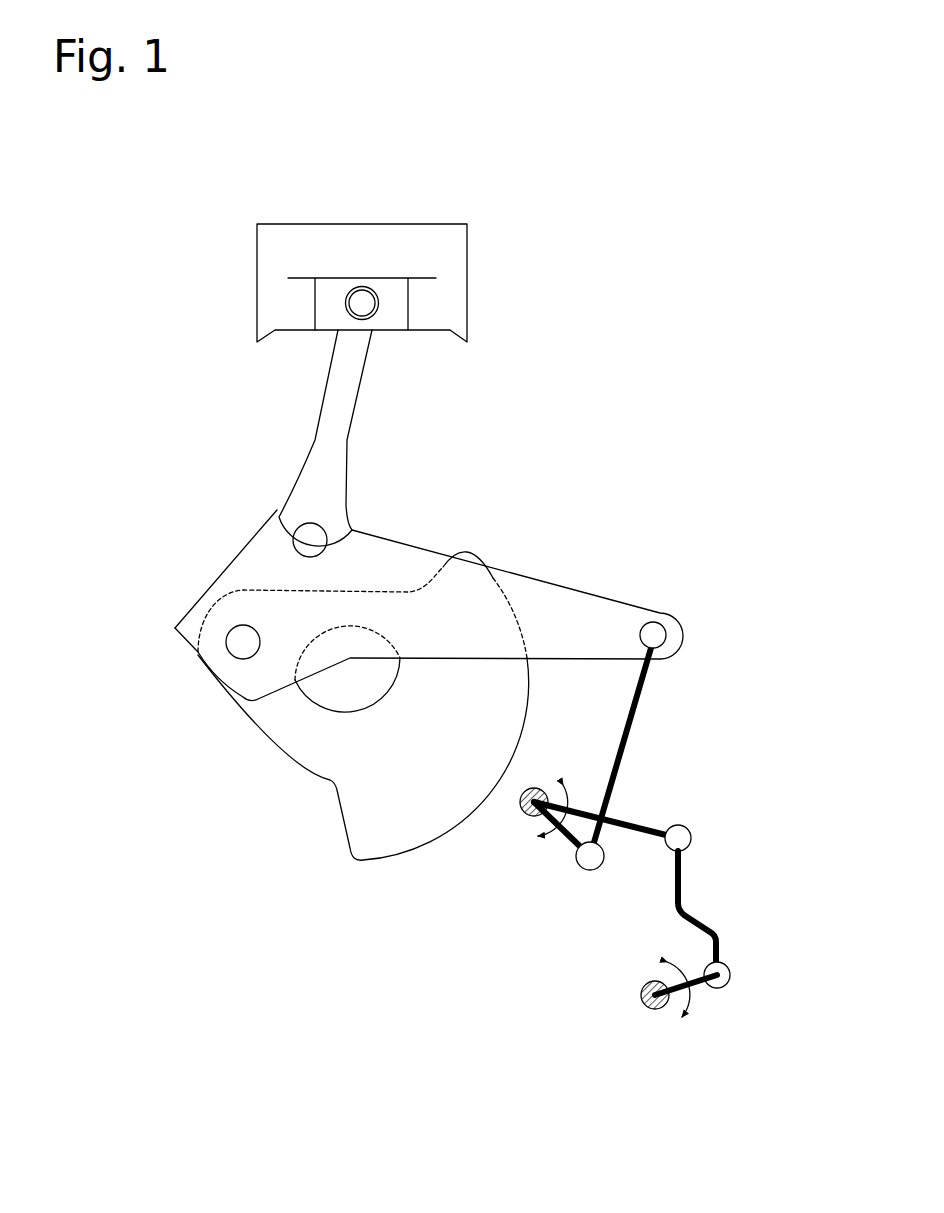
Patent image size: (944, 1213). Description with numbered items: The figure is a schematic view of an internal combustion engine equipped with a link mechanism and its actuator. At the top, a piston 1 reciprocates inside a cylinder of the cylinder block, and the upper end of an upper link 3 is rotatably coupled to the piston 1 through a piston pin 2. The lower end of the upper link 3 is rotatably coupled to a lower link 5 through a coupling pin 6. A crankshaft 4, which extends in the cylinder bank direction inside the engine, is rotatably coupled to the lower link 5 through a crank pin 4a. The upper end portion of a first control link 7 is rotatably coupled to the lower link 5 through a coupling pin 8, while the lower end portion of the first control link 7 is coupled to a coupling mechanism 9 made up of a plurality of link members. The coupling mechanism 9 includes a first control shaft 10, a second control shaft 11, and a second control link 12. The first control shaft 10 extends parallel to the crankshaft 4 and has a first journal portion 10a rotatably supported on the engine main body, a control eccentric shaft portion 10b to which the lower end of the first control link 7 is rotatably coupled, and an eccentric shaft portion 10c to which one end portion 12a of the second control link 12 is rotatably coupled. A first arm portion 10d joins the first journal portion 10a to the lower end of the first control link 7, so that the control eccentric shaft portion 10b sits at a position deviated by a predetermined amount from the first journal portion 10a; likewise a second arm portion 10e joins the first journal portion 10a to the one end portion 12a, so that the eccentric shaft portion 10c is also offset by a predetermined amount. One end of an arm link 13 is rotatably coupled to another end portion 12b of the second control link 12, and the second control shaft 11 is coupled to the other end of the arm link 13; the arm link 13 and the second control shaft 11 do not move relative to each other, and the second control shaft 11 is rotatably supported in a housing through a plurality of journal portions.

The piston 1 is at (468, 263).
The piston pin 2 is at (362, 298).
The upper link 3 is at (353, 380).
The crankshaft 4 is at (278, 737).
The crank pin 4a is at (236, 633).
The lower link 5 is at (380, 548).
The coupling pin 6 is at (307, 540).
The first control link 7 is at (643, 705).
The coupling pin 8 is at (652, 637).
The coupling mechanism 9 is at (654, 892).
The first control shaft 10 is at (617, 836).
The first journal portion 10a is at (533, 790).
The control eccentric shaft portion 10b is at (573, 862).
The eccentric shaft portion 10c is at (692, 835).
The first arm portion 10d is at (562, 837).
The second arm portion 10e is at (632, 823).
The second control shaft 11 is at (650, 1008).
The second control link 12 is at (745, 919).
The one end portion 12a is at (680, 858).
The another end portion 12b is at (722, 953).
The arm link 13 is at (693, 982).